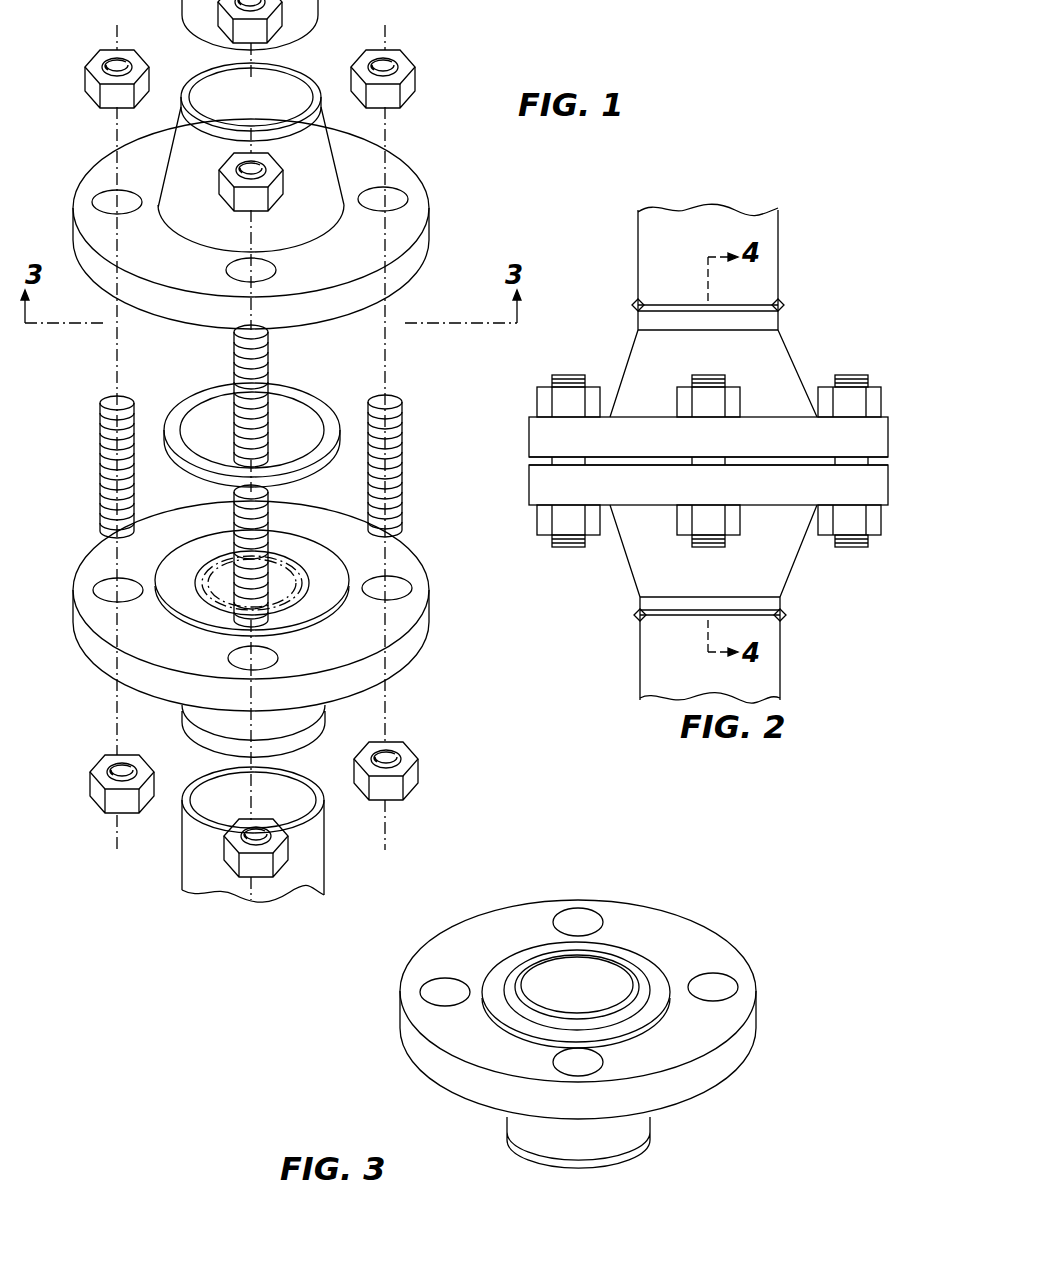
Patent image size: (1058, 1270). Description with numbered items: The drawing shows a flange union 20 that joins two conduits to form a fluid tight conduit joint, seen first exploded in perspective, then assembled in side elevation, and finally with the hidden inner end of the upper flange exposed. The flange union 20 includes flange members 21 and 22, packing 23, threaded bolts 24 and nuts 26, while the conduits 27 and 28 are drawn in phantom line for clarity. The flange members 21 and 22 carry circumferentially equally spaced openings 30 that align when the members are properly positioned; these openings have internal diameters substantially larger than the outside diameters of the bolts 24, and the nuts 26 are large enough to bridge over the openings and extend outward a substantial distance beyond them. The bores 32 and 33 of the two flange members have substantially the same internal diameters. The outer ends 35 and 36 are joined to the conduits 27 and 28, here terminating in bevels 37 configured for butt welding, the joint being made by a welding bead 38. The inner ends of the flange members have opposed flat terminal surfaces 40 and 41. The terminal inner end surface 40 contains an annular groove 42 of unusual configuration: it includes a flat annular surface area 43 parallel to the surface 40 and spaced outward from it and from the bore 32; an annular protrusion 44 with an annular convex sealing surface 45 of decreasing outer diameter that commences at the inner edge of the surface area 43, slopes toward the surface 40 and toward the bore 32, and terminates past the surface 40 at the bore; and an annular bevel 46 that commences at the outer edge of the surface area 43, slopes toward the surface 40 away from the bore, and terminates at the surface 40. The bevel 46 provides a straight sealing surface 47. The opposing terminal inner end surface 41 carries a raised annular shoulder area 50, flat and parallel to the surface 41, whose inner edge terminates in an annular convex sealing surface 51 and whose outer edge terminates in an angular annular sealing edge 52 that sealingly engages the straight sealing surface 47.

In FIG. 1, the flange union 20 is at (60, 118).
In FIG. 2, the flange union 20 is at (848, 310).
In FIG. 1, the flange member 21 is at (251, 224).
In FIG. 2, the flange member 21 is at (708, 393).
In FIG. 3, the flange member 21 is at (578, 1009).
In FIG. 1, the flange member 22 is at (251, 606).
In FIG. 2, the flange member 22 is at (708, 531).
In FIG. 1, the packing 23 is at (318, 408).
In FIG. 2, the packing 23 is at (708, 461).
In FIG. 1, the threaded bolts 24 is at (268, 555).
In FIG. 2, the threaded bolts 24 is at (862, 548).
In FIG. 1, the nuts 26 is at (230, 845).
In FIG. 2, the nuts 26 is at (880, 400).
In FIG. 1, the conduit 27 is at (312, 20).
In FIG. 2, the conduit 27 is at (780, 238).
In FIG. 1, the conduit 28 is at (325, 862).
In FIG. 2, the conduit 28 is at (782, 690).
In FIG. 1, the openings 30 is at (135, 207).
In FIG. 3, the openings 30 is at (603, 1062).
In FIG. 1, the bore 32 is at (305, 85).
In FIG. 3, the bore 32 is at (615, 965).
In FIG. 1, the bore 33 is at (300, 608).
In FIG. 1, the outer end 35 is at (193, 130).
In FIG. 2, the outer end 35 is at (645, 320).
In FIG. 3, the outer end 35 is at (510, 1132).
In FIG. 1, the outer end 36 is at (320, 722).
In FIG. 2, the outer end 36 is at (772, 607).
In FIG. 2, the bevels 37 is at (630, 305).
In FIG. 2, the welding bead 38 is at (785, 305).
In FIG. 3, the terminal inner end surface 40 is at (618, 915).
In FIG. 1, the terminal inner end surface 41 is at (162, 530).
In FIG. 3, the annular groove 42 is at (500, 1005).
In FIG. 3, the flat annular surface area 43 is at (655, 992).
In FIG. 3, the annular protrusion 44 is at (540, 1018).
In FIG. 3, the annular convex sealing surface 45 is at (578, 1025).
In FIG. 3, the annular bevel 46 is at (670, 1005).
In FIG. 3, the straight sealing surface 47 is at (514, 945).
In FIG. 1, the raised annular shoulder area 50 is at (252, 583).
In FIG. 1, the annular convex sealing surface 51 is at (305, 578).
In FIG. 1, the angular annular sealing edge 52 is at (298, 620).